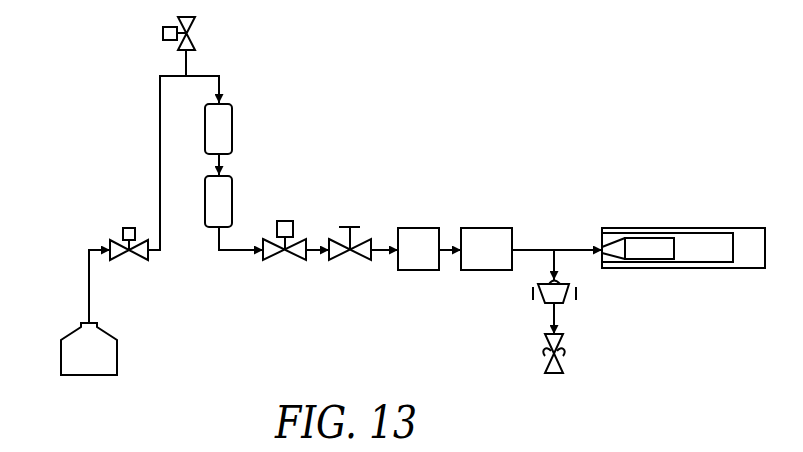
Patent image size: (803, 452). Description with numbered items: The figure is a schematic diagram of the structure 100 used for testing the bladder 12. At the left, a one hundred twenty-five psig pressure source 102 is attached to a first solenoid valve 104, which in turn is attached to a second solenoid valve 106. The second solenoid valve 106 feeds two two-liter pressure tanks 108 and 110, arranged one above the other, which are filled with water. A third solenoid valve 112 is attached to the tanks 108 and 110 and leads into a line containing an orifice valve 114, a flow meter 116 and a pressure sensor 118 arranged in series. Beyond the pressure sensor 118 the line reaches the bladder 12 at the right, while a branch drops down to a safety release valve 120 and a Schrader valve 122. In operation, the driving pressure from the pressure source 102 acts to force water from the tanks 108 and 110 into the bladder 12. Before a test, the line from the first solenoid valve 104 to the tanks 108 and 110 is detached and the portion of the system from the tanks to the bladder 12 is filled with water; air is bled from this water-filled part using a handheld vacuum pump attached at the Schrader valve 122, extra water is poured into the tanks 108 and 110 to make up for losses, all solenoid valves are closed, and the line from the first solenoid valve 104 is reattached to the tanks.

The structure 100 is at (532, 107).
The pressure source 102 is at (70, 352).
The first solenoid valve 104 is at (120, 242).
The second solenoid valve 106 is at (176, 45).
The pressure tank 108 is at (226, 117).
The pressure tank 110 is at (226, 186).
The third solenoid valve 112 is at (270, 258).
The orifice valve 114 is at (356, 258).
The flow meter 116 is at (405, 228).
The pressure sensor 118 is at (497, 228).
The bladder 12 is at (640, 245).
The safety release valve 120 is at (560, 293).
The Schrader valve 122 is at (563, 340).